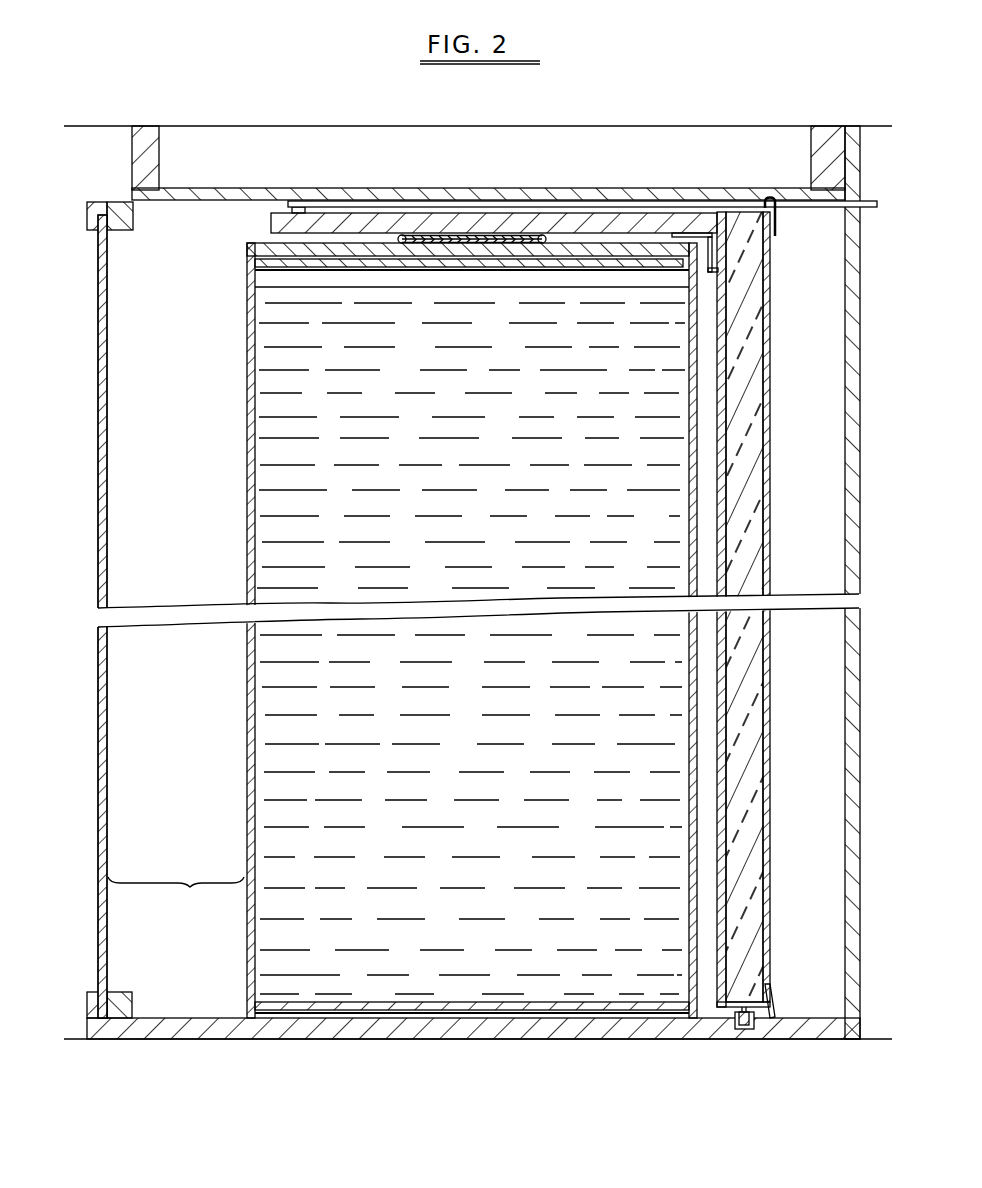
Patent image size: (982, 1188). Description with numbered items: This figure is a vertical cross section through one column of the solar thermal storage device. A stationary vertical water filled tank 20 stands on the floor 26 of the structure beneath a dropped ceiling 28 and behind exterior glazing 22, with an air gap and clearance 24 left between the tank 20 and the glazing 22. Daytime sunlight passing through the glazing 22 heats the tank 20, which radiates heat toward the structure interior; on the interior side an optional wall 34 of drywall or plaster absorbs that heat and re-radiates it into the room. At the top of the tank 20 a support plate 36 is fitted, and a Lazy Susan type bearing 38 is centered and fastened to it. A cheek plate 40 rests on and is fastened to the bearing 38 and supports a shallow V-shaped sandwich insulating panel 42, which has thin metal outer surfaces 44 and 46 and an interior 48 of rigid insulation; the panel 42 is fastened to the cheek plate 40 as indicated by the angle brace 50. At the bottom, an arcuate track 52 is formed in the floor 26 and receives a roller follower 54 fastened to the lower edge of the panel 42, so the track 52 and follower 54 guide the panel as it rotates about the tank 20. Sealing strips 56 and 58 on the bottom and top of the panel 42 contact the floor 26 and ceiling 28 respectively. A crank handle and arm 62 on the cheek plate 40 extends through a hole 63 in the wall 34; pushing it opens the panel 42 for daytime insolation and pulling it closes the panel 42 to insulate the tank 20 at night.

The water filled tank 20 is at (247, 467).
The glazing 22 is at (110, 390).
The air gap and clearance 24 is at (176, 899).
The floor 26 is at (327, 1040).
The dropped ceiling 28 is at (203, 204).
The wall 34 is at (850, 407).
The support plate 36 is at (245, 240).
The bearing 38 is at (418, 244).
The cheek plate 40 is at (270, 224).
The sandwich insulating panel 42 is at (770, 363).
The outer surface 44 is at (772, 442).
The outer surface 46 is at (720, 498).
The interior of rigid insulation 48 is at (745, 493).
The angle brace 50 is at (710, 272).
The arcuate track 52 is at (758, 1027).
The roller follower 54 is at (742, 1027).
The sealing strip 56 is at (777, 1007).
The sealing strip 58 is at (777, 228).
The crank handle and arm 62 is at (876, 201).
The hole 63 is at (857, 210).